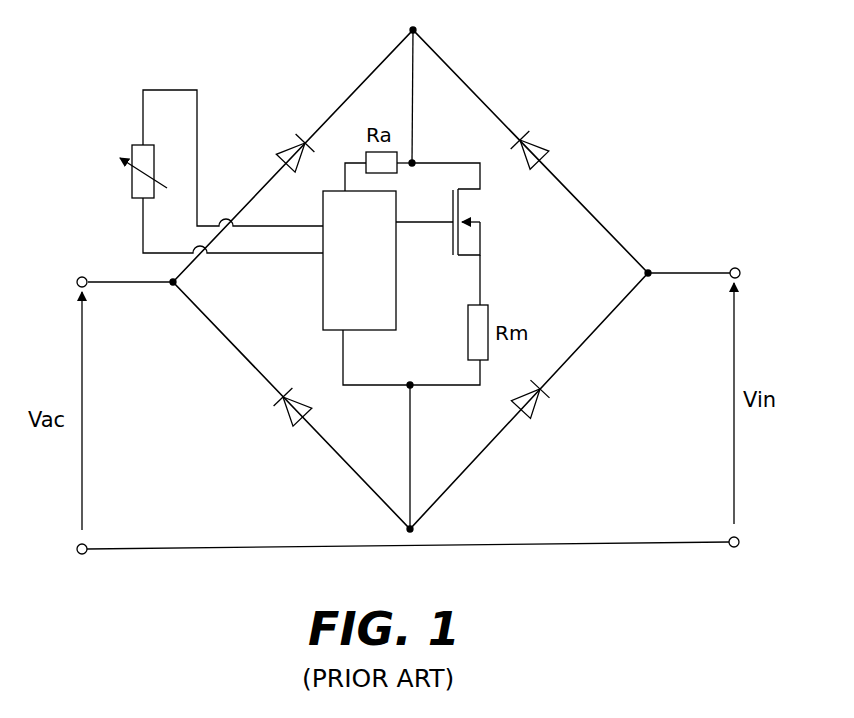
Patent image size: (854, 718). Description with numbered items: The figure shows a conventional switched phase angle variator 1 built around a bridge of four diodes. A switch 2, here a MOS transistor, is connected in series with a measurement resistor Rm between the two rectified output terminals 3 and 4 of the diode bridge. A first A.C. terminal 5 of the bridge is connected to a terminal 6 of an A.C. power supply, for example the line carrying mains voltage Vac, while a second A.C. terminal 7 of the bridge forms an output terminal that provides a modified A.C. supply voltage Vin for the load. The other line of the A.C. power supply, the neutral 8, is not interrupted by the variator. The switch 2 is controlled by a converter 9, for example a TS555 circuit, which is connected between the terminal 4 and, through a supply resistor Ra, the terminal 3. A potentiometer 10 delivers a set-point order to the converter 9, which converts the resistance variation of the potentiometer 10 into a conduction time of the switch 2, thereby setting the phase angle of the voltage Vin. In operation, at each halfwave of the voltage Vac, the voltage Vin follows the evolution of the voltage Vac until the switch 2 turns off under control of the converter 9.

The switched phase angle variator 1 is at (639, 167).
The switch 2 is at (500, 227).
The rectified output terminal 3 is at (416, 30).
The rectified output terminal 4 is at (413, 530).
The first A.C. terminal 5 is at (173, 284).
The terminal 6 is at (80, 277).
The second A.C. terminal 7 is at (652, 270).
The neutral 8 is at (585, 548).
The converter 9 is at (323, 289).
The potentiometer 10 is at (134, 145).